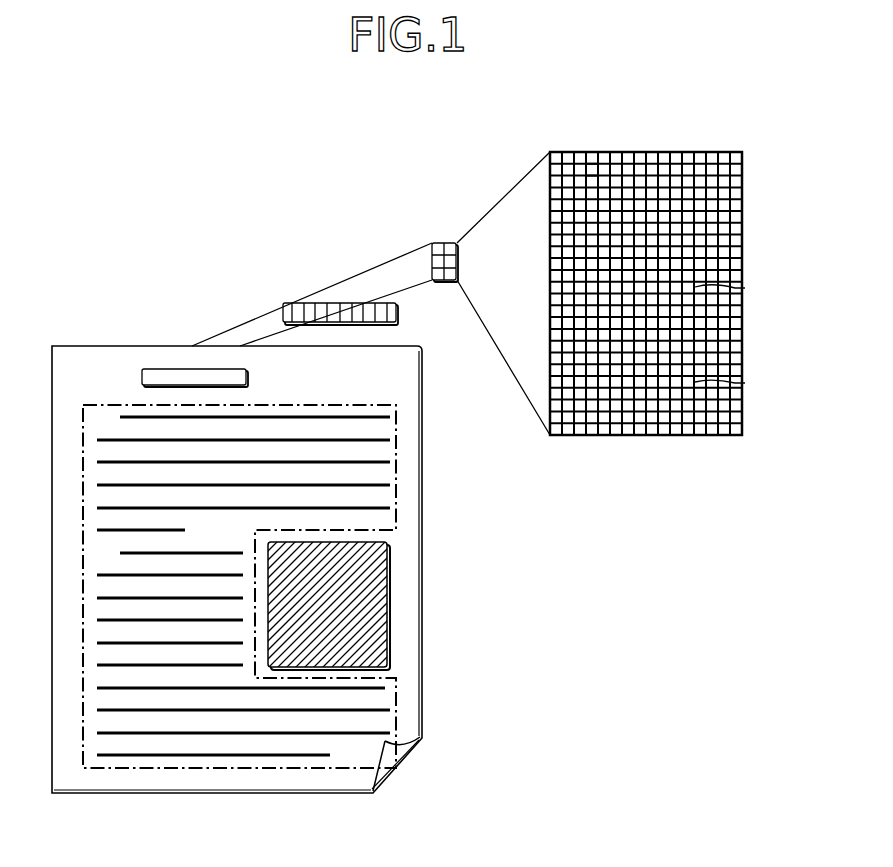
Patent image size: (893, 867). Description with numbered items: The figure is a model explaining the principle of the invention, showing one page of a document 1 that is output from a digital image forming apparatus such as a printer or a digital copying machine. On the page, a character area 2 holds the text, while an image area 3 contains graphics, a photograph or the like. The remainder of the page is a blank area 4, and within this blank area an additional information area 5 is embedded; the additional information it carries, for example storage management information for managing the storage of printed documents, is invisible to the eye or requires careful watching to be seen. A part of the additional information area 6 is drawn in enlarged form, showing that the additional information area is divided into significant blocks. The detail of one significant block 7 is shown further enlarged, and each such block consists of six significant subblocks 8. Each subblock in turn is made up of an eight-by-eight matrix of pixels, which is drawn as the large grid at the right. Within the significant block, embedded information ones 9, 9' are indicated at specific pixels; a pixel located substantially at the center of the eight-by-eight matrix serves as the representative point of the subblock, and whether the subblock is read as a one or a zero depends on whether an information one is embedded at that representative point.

The page of a document 1 is at (424, 522).
The character area 2 is at (217, 770).
The image area 3 is at (407, 638).
The blank area 4 is at (93, 357).
The additional information area 5 is at (160, 368).
The part of the additional information area 6 is at (343, 302).
The significant block 7 is at (443, 243).
The significant subblock 8 is at (605, 437).
The information "1" 9 is at (591, 149).
The information "1" 9' is at (741, 289).